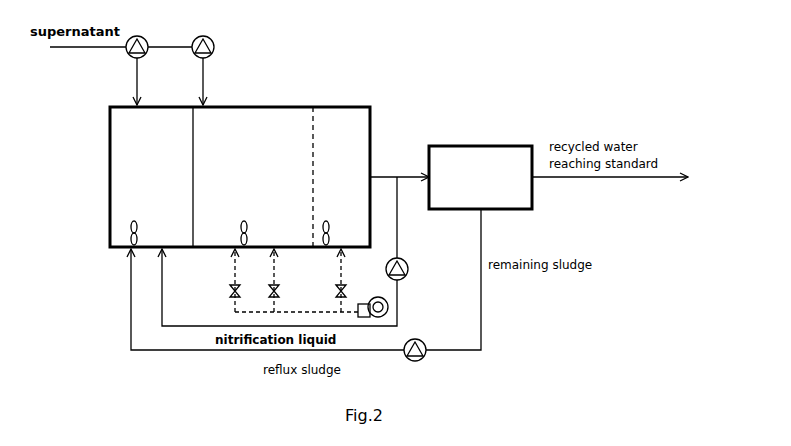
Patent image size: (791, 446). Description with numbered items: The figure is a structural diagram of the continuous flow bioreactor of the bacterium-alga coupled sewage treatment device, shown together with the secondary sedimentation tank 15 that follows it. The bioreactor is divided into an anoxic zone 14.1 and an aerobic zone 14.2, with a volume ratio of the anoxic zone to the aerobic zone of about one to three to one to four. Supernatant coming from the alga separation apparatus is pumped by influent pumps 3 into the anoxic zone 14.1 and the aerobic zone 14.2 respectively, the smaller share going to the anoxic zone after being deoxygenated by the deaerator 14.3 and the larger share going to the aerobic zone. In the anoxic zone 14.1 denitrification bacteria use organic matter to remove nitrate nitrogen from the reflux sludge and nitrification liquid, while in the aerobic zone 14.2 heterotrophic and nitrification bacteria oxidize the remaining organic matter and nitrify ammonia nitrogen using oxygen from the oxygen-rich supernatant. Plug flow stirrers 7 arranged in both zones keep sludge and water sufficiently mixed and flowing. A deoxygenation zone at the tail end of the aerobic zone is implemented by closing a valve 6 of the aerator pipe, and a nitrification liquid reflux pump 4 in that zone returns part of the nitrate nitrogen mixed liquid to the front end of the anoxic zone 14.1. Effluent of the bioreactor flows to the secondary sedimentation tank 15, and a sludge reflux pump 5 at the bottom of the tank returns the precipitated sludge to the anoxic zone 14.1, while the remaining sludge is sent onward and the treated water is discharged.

The influent pump 3 is at (170, 62).
The anoxic zone 14.1 is at (151, 177).
The aerobic zone 14.2 is at (253, 177).
The deaerator 14.3 is at (341, 177).
The secondary sedimentation tank 15 is at (480, 177).
The nitrification liquid reflux pump 4 is at (401, 269).
The sludge reflux pump 5 is at (415, 361).
The valve 6 is at (309, 283).
The plug flow stirrer 7 is at (235, 233).